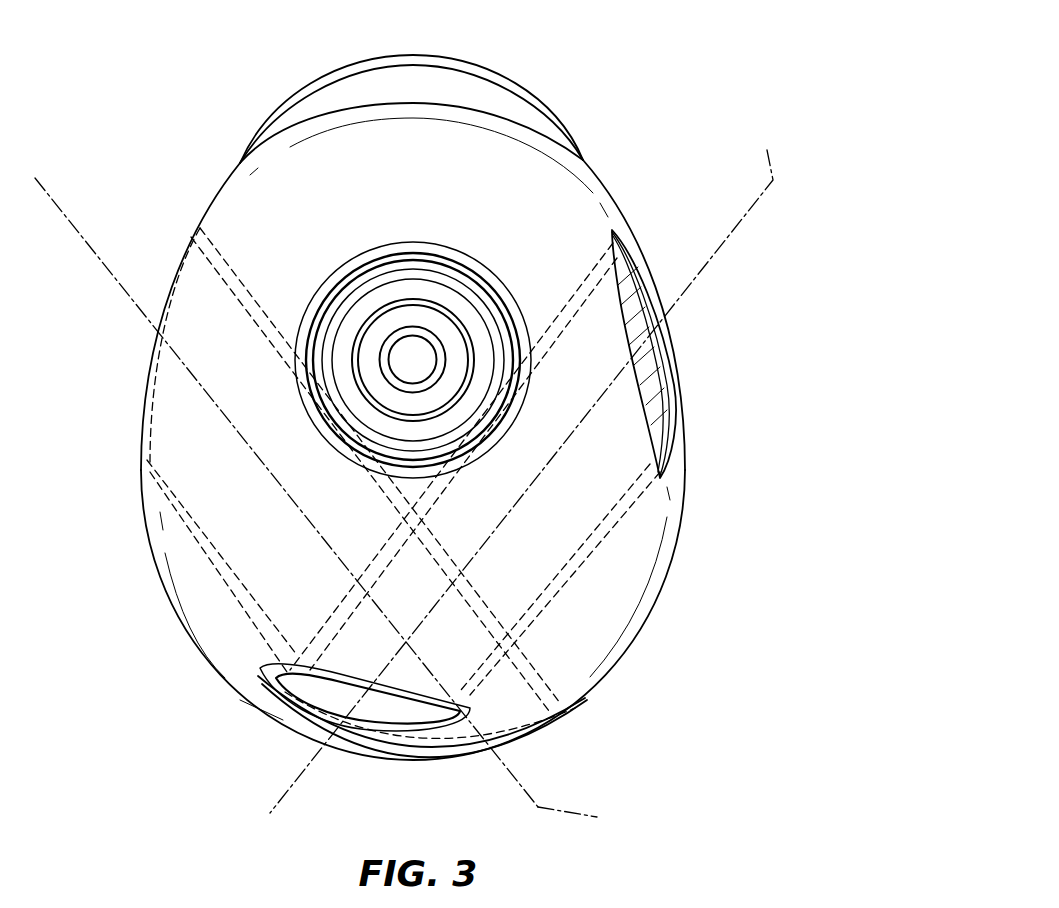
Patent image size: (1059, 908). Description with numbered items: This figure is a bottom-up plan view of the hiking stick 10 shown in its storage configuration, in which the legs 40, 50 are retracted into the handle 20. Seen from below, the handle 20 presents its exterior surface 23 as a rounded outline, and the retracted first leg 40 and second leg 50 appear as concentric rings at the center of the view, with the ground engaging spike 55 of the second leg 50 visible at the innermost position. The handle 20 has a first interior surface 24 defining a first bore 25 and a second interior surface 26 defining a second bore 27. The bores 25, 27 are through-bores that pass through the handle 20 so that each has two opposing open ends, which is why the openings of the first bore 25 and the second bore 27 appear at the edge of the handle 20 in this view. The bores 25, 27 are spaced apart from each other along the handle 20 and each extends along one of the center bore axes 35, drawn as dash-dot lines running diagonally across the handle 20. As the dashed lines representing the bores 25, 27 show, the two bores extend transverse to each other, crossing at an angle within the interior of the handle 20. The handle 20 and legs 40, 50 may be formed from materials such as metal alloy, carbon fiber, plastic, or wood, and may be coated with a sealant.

The hiking stick 10 is at (677, 64).
The handle 20 is at (627, 634).
The exterior surface 23 is at (633, 545).
The first interior surface 24 is at (443, 757).
The first bore 25 is at (547, 731).
The second interior surface 26 is at (633, 293).
The second bore 27 is at (670, 391).
The center bore axes 35 is at (411, 476).
The first leg 40 is at (371, 272).
The second leg 50 is at (465, 300).
The ground engaging spike 55 is at (414, 318).